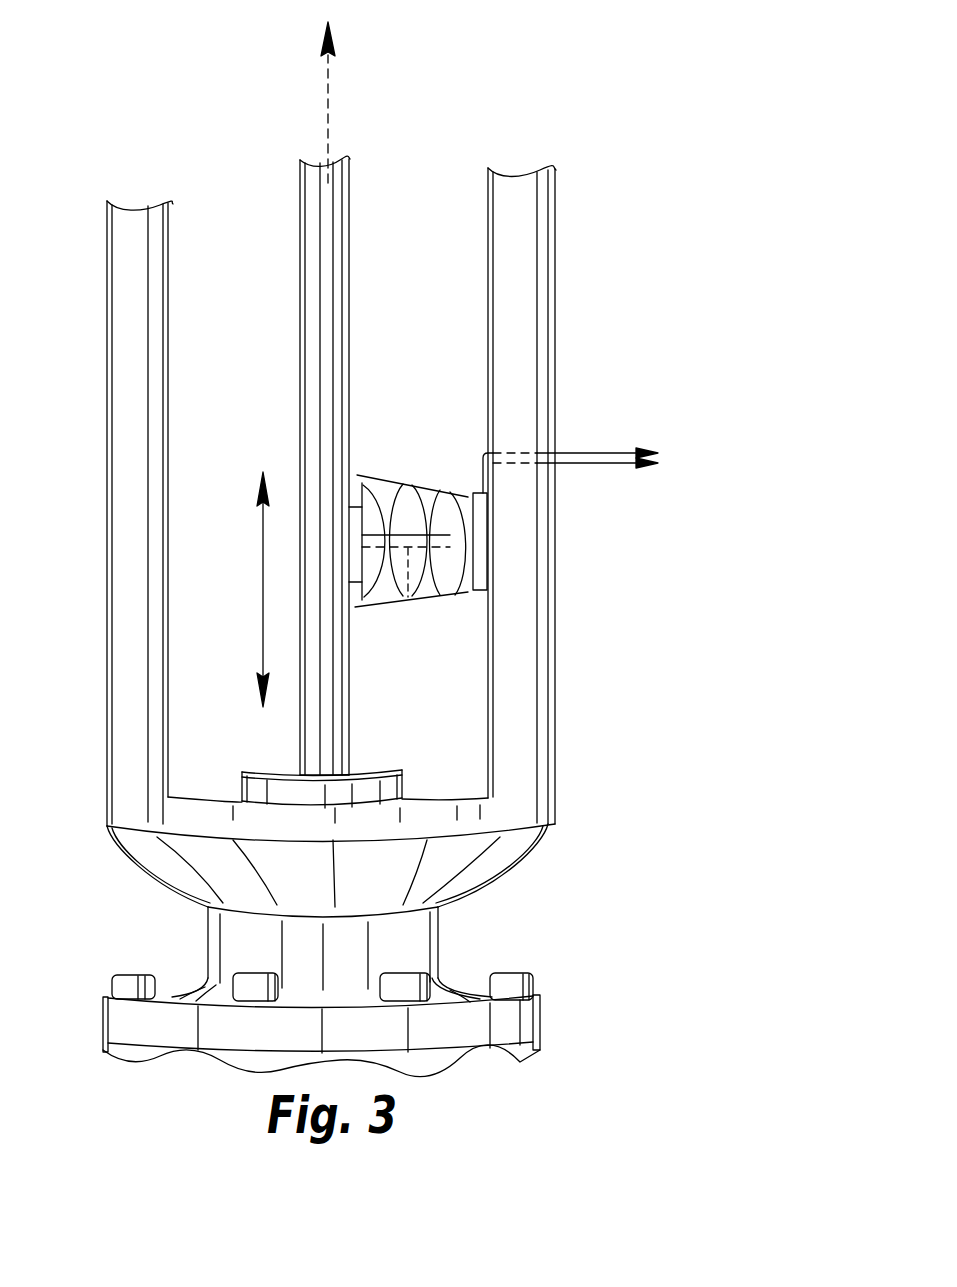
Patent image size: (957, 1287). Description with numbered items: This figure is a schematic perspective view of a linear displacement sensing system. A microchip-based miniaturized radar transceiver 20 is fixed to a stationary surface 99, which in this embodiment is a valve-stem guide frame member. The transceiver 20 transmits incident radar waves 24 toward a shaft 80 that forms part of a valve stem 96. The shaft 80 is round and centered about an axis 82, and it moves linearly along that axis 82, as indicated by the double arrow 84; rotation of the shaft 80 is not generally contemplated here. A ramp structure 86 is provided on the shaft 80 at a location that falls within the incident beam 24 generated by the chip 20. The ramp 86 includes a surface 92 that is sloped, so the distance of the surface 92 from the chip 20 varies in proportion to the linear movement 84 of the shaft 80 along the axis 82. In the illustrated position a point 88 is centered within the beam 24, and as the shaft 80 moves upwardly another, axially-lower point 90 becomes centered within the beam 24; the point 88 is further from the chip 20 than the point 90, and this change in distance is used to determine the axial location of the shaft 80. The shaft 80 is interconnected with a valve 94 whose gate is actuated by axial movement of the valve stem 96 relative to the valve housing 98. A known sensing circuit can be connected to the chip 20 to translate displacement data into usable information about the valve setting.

The microchip-based miniaturized radar transceiver 20 is at (488, 552).
The incident radar waves 24 is at (453, 598).
The shaft 80 is at (348, 728).
The axis 82 is at (331, 104).
The double arrow 84 is at (262, 580).
The ramp structure 86 is at (360, 583).
The point 88 is at (407, 512).
The point 90 is at (418, 607).
The surface 92 is at (365, 493).
The valve 94 is at (452, 968).
The valve stem 96 is at (292, 762).
The valve housing 98 is at (468, 990).
The stationary surface 99 is at (551, 759).